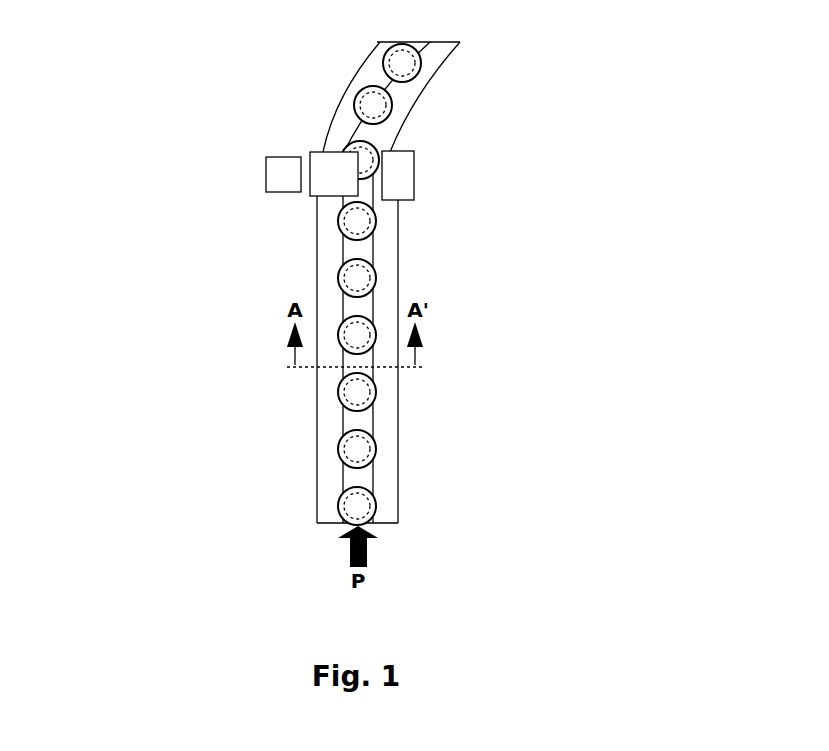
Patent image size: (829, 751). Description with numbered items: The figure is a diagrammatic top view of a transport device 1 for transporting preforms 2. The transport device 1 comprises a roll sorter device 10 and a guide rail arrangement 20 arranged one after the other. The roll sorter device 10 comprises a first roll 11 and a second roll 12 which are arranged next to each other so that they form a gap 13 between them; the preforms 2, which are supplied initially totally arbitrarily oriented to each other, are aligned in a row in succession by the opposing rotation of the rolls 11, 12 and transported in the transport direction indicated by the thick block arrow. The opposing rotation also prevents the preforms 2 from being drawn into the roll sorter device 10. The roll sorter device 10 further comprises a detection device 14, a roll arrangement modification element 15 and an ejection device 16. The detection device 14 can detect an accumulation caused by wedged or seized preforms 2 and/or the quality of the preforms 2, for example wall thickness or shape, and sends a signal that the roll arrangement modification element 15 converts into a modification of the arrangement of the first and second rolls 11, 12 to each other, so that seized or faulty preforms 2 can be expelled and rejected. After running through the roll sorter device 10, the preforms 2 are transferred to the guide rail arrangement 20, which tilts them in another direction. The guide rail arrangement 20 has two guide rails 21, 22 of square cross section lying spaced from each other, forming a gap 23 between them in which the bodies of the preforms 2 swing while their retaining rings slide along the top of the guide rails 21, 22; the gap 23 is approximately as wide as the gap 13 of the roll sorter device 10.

The transport device 1 is at (122, 194).
The preforms 2 is at (371, 445).
The roll sorter device 10 is at (232, 406).
The first roll 11 is at (392, 518).
The second roll 12 is at (323, 518).
The gap 13 is at (367, 477).
The detection device 14 is at (269, 170).
The roll arrangement modification element 15 is at (406, 167).
The ejection device 16 is at (317, 187).
The guide rail arrangement 20 is at (252, 60).
The guide rail 21 is at (403, 112).
The guide rail 22 is at (339, 116).
The gap 23 is at (381, 77).